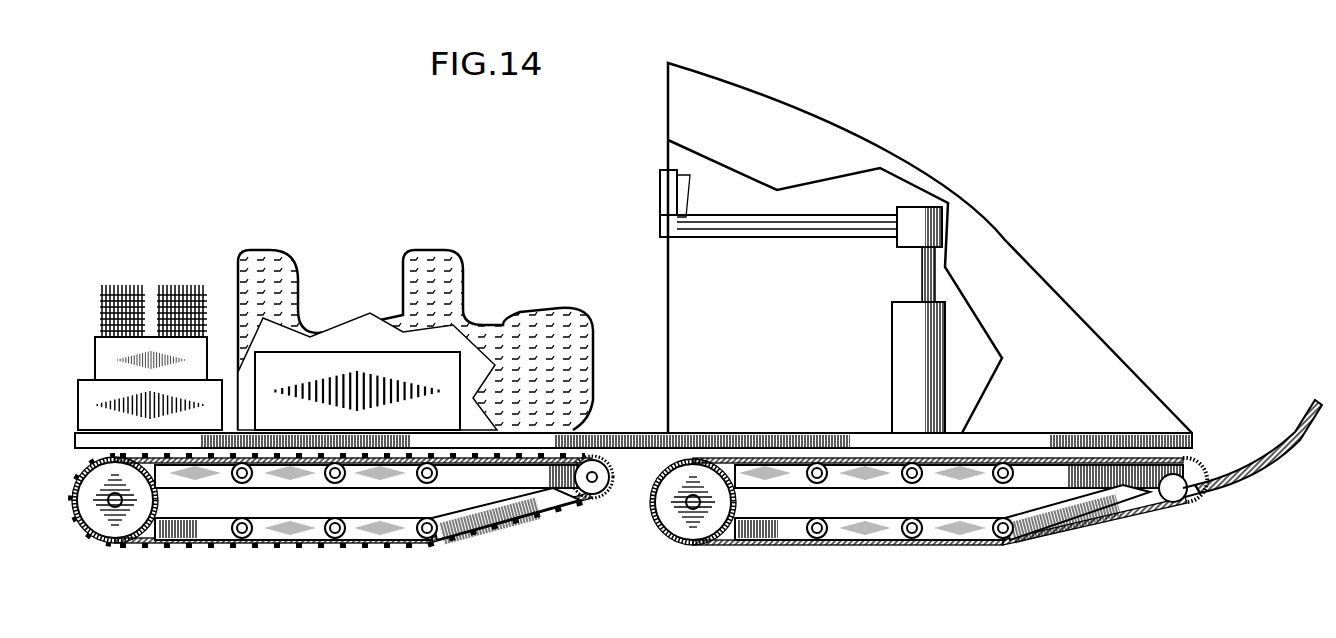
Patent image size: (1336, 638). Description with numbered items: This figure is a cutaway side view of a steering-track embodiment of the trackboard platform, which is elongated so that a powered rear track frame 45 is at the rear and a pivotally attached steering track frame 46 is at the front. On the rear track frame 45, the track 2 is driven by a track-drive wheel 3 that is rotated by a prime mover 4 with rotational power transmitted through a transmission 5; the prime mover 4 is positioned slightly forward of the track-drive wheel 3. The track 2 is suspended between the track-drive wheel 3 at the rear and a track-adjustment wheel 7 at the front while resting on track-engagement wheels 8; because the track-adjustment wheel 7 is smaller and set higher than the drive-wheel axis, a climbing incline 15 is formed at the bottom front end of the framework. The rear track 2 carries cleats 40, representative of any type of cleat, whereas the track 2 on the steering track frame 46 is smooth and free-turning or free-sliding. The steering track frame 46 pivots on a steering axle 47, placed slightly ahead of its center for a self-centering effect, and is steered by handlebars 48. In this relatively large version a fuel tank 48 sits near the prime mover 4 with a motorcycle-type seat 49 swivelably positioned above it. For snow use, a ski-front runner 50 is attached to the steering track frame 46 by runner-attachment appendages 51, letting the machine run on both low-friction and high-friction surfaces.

The track 2 is at (190, 545).
The track-drive wheel 3 is at (125, 538).
The prime mover 4 is at (132, 287).
The transmission 5 is at (157, 388).
The track-adjustment wheel 7 is at (590, 503).
The track-engagement wheels 8 is at (320, 545).
The climbing incline 15 is at (510, 522).
The cleats 40 is at (255, 545).
The rear track frame 45 is at (380, 545).
The steering track frame 46 is at (847, 473).
The steering axle 47 is at (910, 460).
The steering handle or handlebars 48 is at (345, 368).
The seat 49 is at (308, 318).
The ski-front runner 50 is at (1290, 440).
The runner-attachment appendages 51 is at (1210, 463).